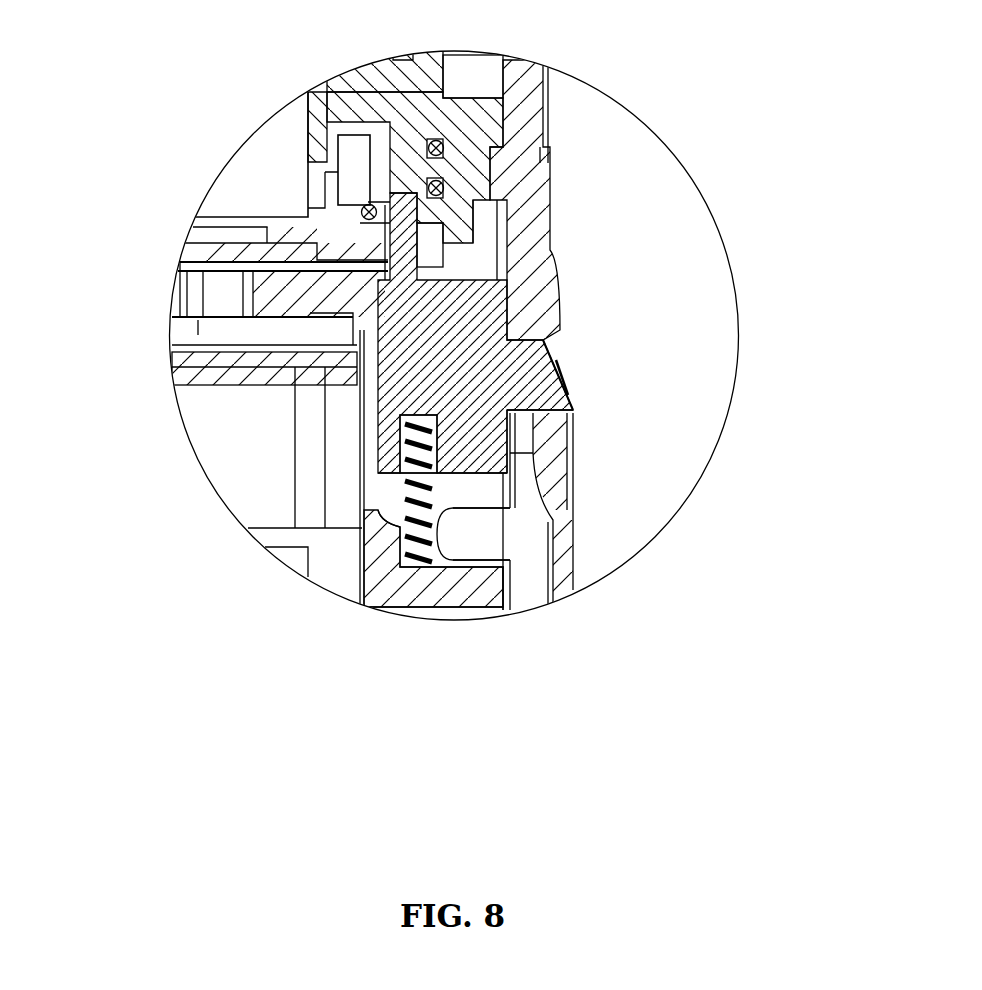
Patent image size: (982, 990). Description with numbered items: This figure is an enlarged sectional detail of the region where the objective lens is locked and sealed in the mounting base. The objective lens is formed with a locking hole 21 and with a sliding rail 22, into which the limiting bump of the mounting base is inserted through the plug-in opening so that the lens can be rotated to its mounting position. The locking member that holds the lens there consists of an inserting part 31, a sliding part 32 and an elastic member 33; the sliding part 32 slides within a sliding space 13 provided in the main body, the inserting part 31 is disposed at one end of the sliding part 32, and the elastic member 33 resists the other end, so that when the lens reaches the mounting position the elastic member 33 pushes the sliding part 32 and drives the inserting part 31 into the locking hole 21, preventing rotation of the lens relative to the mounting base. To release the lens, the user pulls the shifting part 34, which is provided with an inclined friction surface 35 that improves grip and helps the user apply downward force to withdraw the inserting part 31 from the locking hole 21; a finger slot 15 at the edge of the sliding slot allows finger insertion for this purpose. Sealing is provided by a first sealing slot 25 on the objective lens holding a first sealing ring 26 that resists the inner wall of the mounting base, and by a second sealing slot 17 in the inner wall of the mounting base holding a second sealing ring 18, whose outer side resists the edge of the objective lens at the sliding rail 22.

The sliding space 13 is at (385, 488).
The finger slot 15 is at (557, 497).
The second sealing slot 17 is at (361, 210).
The second sealing ring 18 is at (375, 216).
The locking hole 21 is at (428, 190).
The sliding rail 22 is at (380, 133).
The first sealing slot 25 is at (442, 136).
The first sealing ring 26 is at (445, 189).
The inserting part 31 is at (407, 243).
The sliding part 32 is at (410, 355).
The elastic member 33 is at (400, 547).
The shifting part 34 is at (527, 400).
The friction surface 35 is at (560, 362).